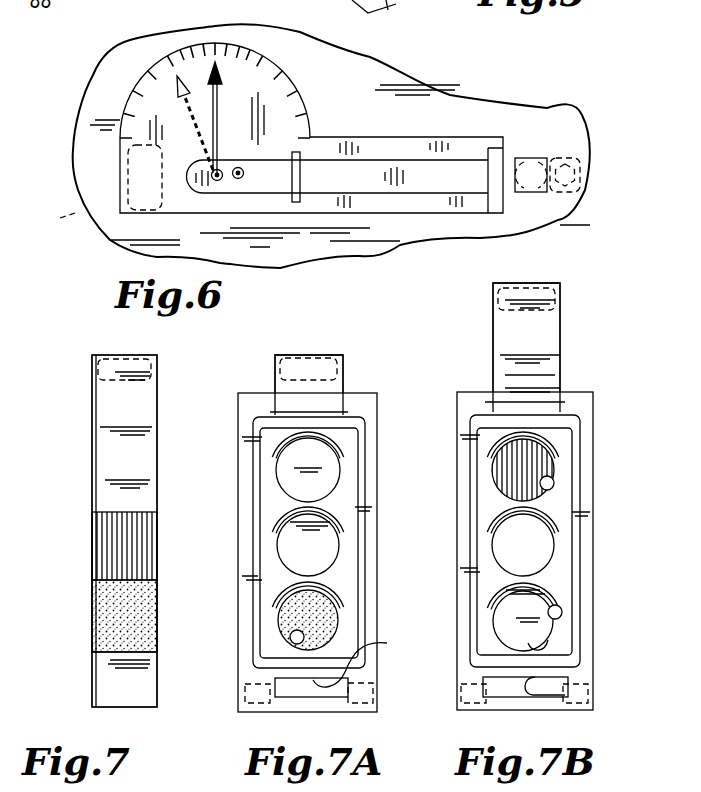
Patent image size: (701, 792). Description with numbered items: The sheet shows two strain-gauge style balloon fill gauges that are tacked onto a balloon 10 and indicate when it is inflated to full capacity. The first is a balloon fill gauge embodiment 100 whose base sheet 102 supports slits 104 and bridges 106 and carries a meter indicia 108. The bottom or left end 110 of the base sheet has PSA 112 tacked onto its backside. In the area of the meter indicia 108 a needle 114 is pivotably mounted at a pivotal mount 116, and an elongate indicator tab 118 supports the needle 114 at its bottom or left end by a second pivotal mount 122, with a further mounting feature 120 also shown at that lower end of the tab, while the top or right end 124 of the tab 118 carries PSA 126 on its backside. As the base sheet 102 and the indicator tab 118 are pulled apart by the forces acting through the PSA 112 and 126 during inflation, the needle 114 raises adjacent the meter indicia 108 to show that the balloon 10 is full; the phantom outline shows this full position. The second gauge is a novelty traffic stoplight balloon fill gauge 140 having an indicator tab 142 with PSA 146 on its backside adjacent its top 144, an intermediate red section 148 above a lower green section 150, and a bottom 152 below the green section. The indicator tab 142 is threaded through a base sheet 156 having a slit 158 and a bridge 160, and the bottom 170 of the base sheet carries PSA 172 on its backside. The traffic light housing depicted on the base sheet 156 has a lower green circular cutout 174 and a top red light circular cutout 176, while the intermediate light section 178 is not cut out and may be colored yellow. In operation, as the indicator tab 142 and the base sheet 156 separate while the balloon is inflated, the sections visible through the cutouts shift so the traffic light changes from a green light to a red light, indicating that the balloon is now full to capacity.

In FIG. 6, the balloon 10 is at (468, 92).
In FIG. 6, the balloon fill gauge embodiment 100 is at (142, 72).
In FIG. 6, the base sheet 102 is at (358, 145).
In FIG. 6, the slits 104 is at (125, 247).
In FIG. 6, the bridges 106 is at (313, 137).
In FIG. 6, the meter indicia 108 is at (193, 57).
In FIG. 6, the bottom or left end 110 is at (125, 170).
In FIG. 6, the PSA 112 is at (110, 207).
In FIG. 6, the needle 114 is at (224, 88).
In FIG. 6, the pivotal mount 116 is at (212, 155).
In FIG. 6, the elongate indicator tab 118 is at (427, 177).
In FIG. 6, the pivot 120 is at (205, 185).
In FIG. 6, the second pivotal mount 122 is at (242, 180).
In FIG. 6, the top or right end 124 is at (532, 160).
In FIG. 6, the PSA 126 is at (556, 220).
In FIG. 7A, the novelty traffic stoplight balloon fill gauge 140 is at (360, 346).
In FIG. 7B, the novelty traffic stoplight balloon fill gauge 140 is at (602, 380).
In FIG. 7, the indicator tab 142 is at (92, 414).
In FIG. 7A, the indicator tab 142 is at (270, 368).
In FIG. 7B, the indicator tab 142 is at (562, 288).
In FIG. 7, the top 144 is at (92, 362).
In FIG. 7A, the top 144 is at (309, 374).
In FIG. 7B, the top 144 is at (526, 337).
In FIG. 7, the PSA 146 is at (142, 353).
In FIG. 7A, the PSA 146 is at (345, 360).
In FIG. 7B, the PSA 146 is at (533, 282).
In FIG. 7, the intermediate red section 148 is at (92, 553).
In FIG. 7B, the intermediate red section 148 is at (543, 462).
In FIG. 7, the lower green section 150 is at (102, 614).
In FIG. 7A, the lower green section 150 is at (290, 618).
In FIG. 7, the bottom 152 is at (105, 682).
In FIG. 7A, the bottom 152 is at (308, 690).
In FIG. 7B, the bottom 152 is at (540, 648).
In FIG. 7A, the base sheet 156 is at (378, 398).
In FIG. 7B, the base sheet 156 is at (594, 400).
In FIG. 7A, the slit 158 is at (368, 660).
In FIG. 7B, the slit 158 is at (593, 702).
In FIG. 7A, the bridge 160 is at (272, 405).
In FIG. 7A, the bottom 170 is at (385, 702).
In FIG. 7B, the bottom 170 is at (598, 693).
In FIG. 7A, the PSA 172 is at (355, 712).
In FIG. 7B, the PSA 172 is at (585, 686).
In FIG. 7A, the lower green circular cutout 174 is at (293, 638).
In FIG. 7B, the lower green circular cutout 174 is at (556, 618).
In FIG. 7A, the top red light circular cutout 176 is at (287, 464).
In FIG. 7B, the top red light circular cutout 176 is at (550, 488).
In FIG. 7A, the intermediate light section 178 is at (293, 548).
In FIG. 7B, the intermediate light section 178 is at (527, 545).